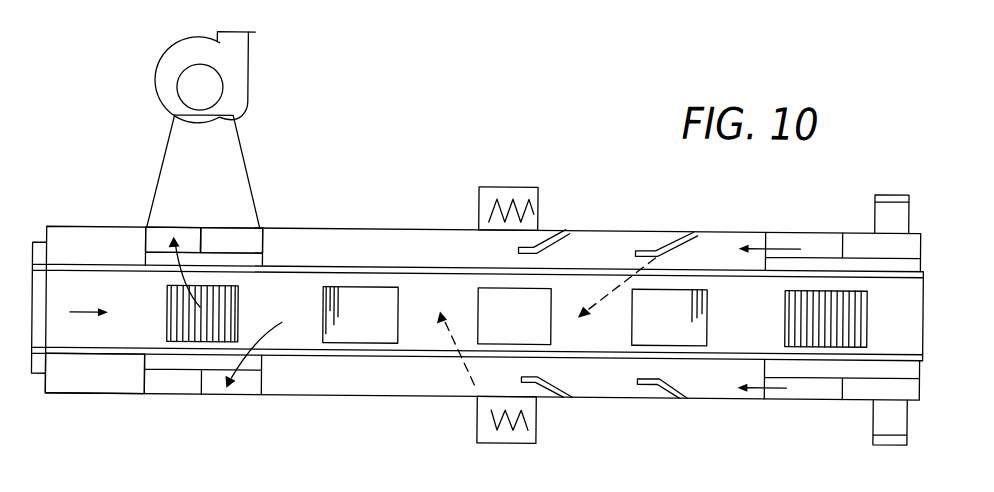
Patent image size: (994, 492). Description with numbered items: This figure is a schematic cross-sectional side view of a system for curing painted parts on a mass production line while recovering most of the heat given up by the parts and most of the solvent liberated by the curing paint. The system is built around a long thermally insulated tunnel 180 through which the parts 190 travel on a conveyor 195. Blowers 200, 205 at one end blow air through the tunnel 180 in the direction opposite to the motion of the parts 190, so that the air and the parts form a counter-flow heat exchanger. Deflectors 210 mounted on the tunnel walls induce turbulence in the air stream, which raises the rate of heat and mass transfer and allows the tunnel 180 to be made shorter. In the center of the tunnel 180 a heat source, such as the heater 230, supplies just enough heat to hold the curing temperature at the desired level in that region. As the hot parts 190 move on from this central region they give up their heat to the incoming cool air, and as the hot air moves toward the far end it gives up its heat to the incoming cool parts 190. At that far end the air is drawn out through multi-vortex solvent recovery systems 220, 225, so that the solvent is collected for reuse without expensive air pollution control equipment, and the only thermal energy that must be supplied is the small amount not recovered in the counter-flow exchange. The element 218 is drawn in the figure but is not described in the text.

The tunnel 180 is at (631, 222).
The parts 190 is at (358, 330).
The conveyor 195 is at (106, 380).
The blower 200 is at (874, 202).
The blower 205 is at (862, 422).
The deflectors 210 is at (665, 391).
The upper damper vane 218 is at (703, 230).
The multi-vortex solvent recovery system 220 is at (248, 240).
The multi-vortex solvent recovery system 225 is at (155, 240).
The heater 230 is at (500, 446).